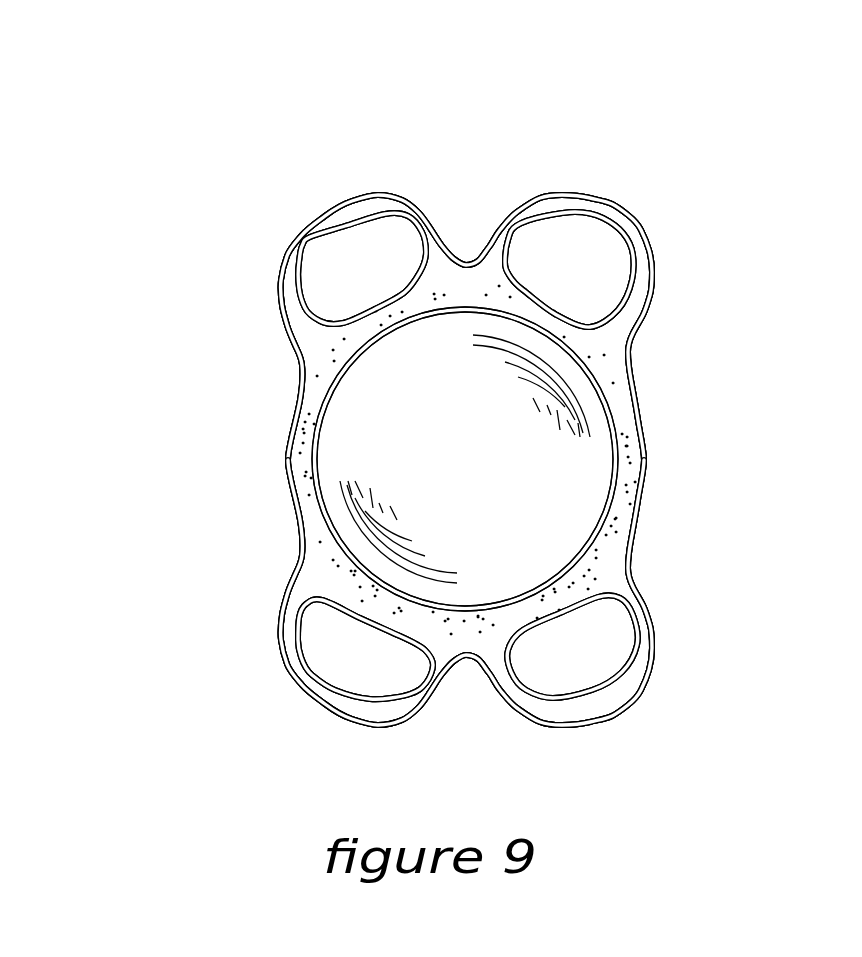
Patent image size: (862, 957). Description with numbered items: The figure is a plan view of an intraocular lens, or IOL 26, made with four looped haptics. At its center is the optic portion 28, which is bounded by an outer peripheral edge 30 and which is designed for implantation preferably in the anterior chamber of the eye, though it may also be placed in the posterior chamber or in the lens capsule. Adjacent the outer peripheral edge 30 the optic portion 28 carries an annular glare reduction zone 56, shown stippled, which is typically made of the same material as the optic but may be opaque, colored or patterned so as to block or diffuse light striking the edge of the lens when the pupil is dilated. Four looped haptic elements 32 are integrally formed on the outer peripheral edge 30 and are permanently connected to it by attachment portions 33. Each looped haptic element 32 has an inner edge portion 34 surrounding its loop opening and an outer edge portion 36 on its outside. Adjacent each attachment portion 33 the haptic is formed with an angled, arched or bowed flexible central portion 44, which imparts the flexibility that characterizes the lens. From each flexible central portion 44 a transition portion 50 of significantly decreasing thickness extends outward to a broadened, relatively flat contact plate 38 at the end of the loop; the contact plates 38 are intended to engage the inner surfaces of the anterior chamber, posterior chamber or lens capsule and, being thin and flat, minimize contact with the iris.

The IOL 26 is at (674, 469).
The optic portion 28 is at (489, 477).
The outer peripheral edge 30 is at (317, 457).
The looped haptic element 32 is at (640, 313).
The attachment portion 33 is at (317, 350).
The inner edge portion 34 is at (299, 281).
The outer edge portion 36 is at (292, 244).
The contact plate 38 is at (345, 213).
The flexible central portion 44 is at (292, 311).
The transition portion 50 is at (428, 225).
The glare reduction zone 56 is at (620, 507).